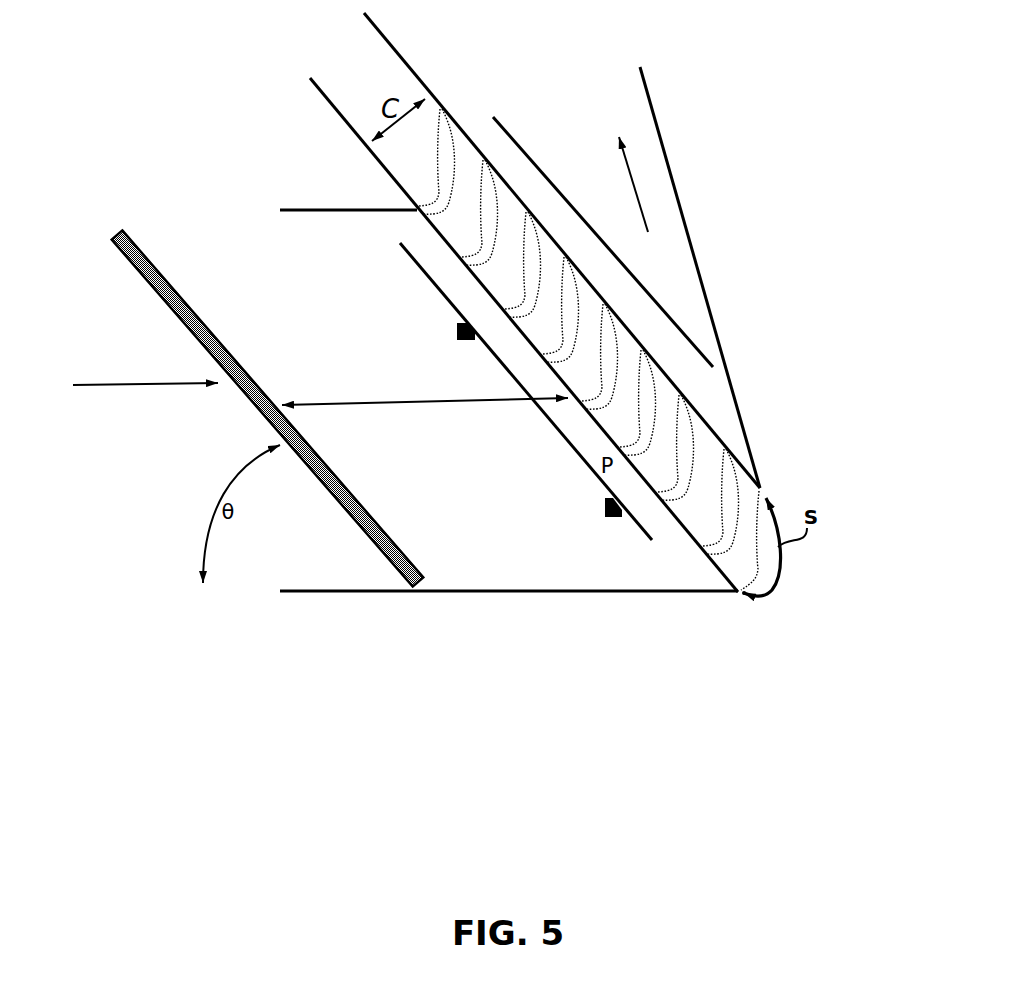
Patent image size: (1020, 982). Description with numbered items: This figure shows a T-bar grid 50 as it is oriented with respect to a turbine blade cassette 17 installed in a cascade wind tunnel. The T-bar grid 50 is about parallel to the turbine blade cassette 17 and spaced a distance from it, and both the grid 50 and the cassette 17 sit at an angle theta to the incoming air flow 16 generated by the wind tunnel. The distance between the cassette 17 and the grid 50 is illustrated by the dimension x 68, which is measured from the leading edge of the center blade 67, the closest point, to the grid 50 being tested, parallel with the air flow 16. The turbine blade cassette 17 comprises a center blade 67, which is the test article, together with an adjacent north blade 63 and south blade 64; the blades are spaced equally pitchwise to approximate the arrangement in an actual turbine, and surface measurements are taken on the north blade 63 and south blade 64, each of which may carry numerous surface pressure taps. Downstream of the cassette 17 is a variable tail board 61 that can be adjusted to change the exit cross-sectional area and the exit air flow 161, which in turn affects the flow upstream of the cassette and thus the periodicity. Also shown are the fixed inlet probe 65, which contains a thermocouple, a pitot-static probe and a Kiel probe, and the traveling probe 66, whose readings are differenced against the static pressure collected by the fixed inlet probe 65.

The air flow 16 is at (145, 398).
The turbine blade cassette 17 is at (777, 603).
The T-bar grid 50 is at (390, 578).
The tailboard 61 is at (680, 177).
The north blade 63 is at (579, 296).
The south blade 64 is at (655, 385).
The fixed inlet probe 65 is at (604, 521).
The traveling probe 66 is at (447, 322).
The center blade 67 is at (617, 329).
The distance x 68 is at (425, 386).
The exit air flow 161 is at (632, 177).